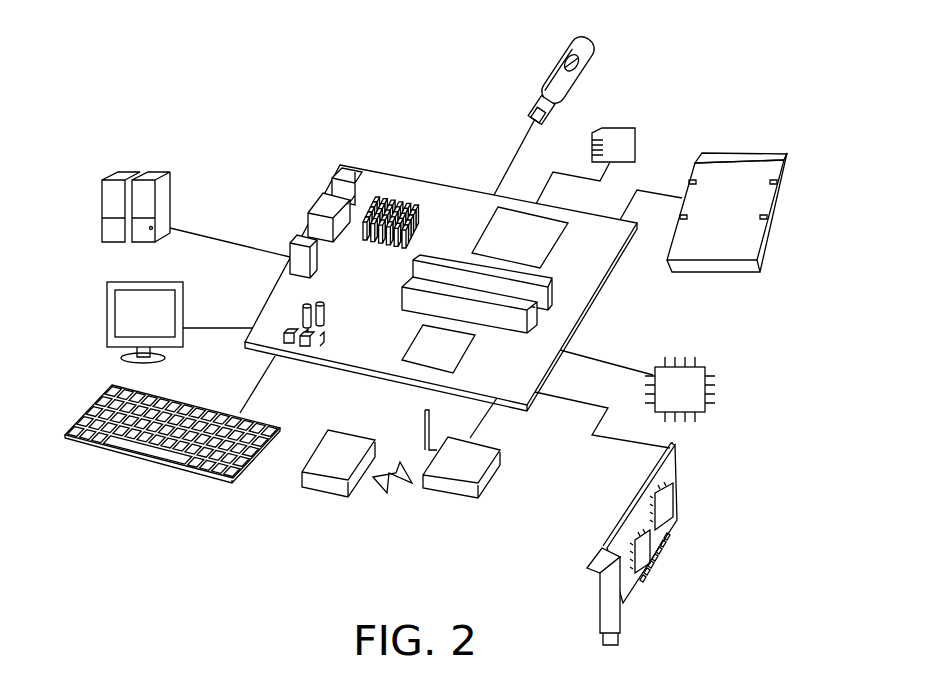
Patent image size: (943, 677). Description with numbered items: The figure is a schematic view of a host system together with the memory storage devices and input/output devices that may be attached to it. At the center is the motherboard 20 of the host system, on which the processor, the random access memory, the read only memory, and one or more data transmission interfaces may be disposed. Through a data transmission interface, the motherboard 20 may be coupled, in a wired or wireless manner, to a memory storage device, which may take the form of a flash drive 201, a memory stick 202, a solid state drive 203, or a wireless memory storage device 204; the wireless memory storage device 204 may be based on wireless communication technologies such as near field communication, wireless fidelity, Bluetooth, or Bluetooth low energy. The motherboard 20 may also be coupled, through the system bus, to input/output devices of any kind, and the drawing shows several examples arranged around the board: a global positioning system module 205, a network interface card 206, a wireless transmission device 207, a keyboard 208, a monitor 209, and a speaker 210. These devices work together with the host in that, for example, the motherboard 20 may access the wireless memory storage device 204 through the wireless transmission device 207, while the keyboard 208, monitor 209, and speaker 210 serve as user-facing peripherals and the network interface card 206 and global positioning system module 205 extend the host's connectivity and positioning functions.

The motherboard 20 is at (443, 200).
The flash drive 201 is at (551, 72).
The memory stick 202 is at (641, 131).
The solid state drive 203 is at (745, 152).
The wireless memory storage device 204 is at (312, 437).
The global positioning system module 205 is at (709, 392).
The network interface card 206 is at (678, 495).
The wireless transmission device 207 is at (495, 480).
The keyboard 208 is at (177, 468).
The monitor 209 is at (104, 330).
The speaker 210 is at (100, 228).